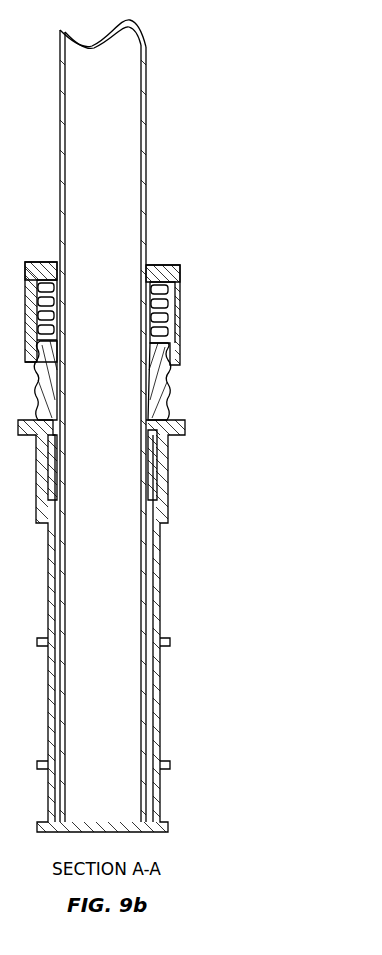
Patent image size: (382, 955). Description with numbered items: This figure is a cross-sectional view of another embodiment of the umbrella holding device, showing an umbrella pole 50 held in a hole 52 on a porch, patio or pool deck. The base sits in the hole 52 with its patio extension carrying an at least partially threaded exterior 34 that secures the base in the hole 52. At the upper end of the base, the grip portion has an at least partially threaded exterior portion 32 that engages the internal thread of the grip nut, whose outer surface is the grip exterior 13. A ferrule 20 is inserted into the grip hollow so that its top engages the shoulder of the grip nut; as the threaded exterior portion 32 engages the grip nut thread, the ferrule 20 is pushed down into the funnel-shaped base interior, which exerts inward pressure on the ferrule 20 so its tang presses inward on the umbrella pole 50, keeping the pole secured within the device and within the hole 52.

The umbrella pole 50 is at (122, 170).
The ferrule 20 is at (157, 278).
The grip exterior 13 is at (180, 305).
The at least partially threaded exterior portion 32 is at (167, 393).
The at least partially threaded exterior 34 is at (152, 467).
The hole 52 is at (150, 512).